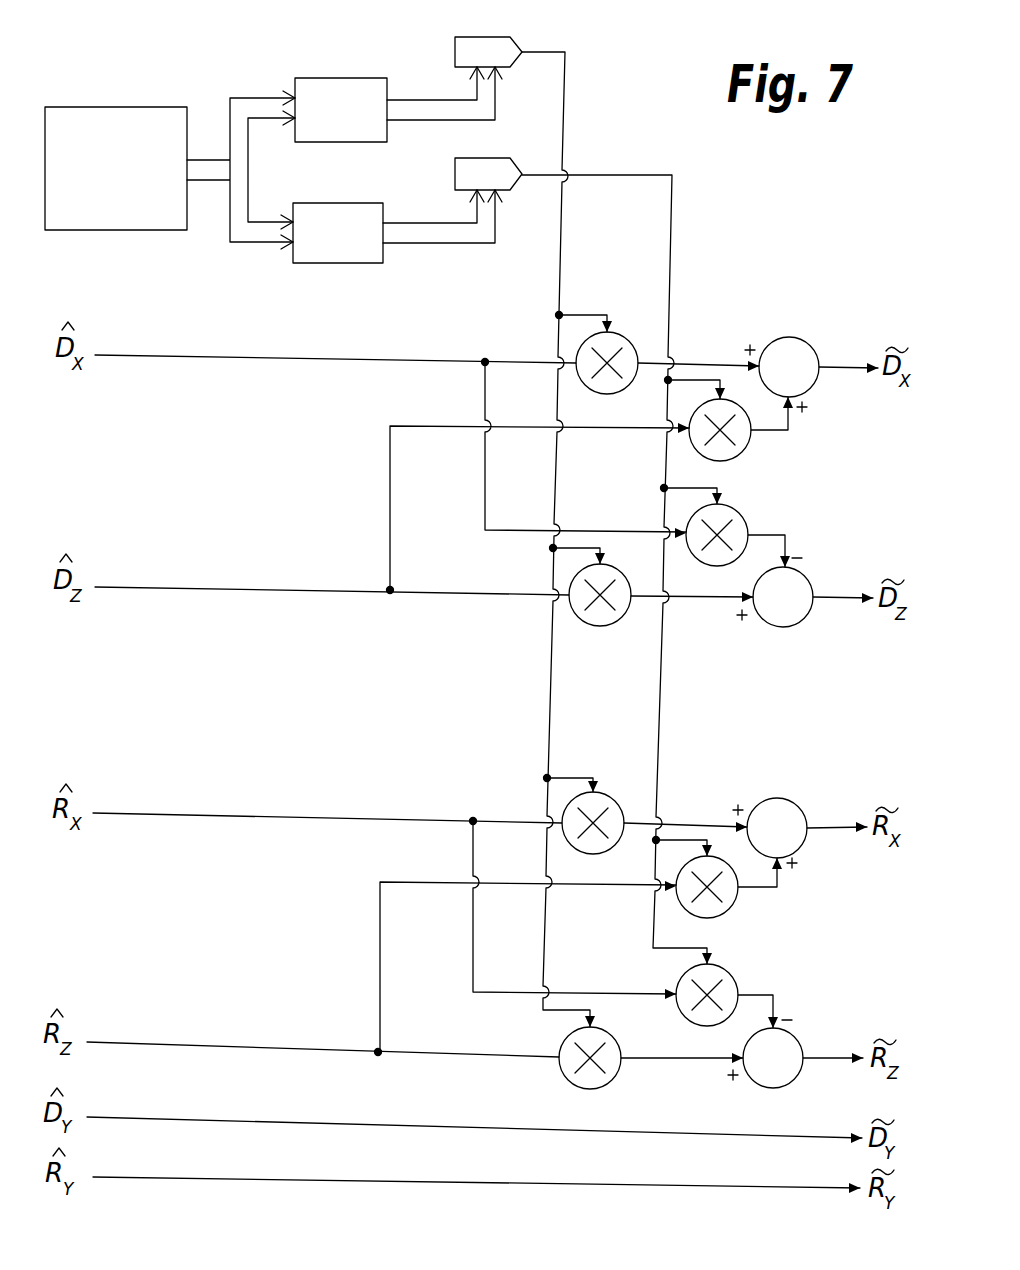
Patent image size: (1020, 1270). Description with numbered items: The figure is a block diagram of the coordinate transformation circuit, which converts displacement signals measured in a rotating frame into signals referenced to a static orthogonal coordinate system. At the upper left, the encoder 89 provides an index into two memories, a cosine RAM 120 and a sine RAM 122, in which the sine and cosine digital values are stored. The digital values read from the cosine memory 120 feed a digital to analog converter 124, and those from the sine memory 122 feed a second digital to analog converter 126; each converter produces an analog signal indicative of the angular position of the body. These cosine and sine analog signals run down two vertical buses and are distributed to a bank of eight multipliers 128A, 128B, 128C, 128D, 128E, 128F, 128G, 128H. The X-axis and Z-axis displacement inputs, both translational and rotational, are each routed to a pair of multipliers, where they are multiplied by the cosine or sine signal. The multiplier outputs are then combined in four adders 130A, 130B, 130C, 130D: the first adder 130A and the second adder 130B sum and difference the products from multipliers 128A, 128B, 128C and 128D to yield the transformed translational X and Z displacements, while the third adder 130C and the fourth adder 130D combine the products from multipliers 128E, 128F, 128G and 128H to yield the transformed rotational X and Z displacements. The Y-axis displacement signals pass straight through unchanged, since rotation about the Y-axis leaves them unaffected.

The encoder 89 is at (95, 107).
The memory 120 is at (307, 78).
The memory 122 is at (348, 263).
The digital to analog converter 124 is at (462, 37).
The digital to analog converter 126 is at (475, 158).
The multiplier 128A is at (627, 333).
The multiplier 128B is at (746, 438).
The multiplier 128C is at (735, 506).
The multiplier 128D is at (575, 622).
The multiplier 128E is at (622, 762).
The multiplier 128F is at (737, 903).
The multiplier 128G is at (720, 965).
The multiplier 128H is at (590, 1087).
The adder 130A is at (782, 338).
The adder 130B is at (807, 573).
The adder 130C is at (775, 800).
The adder 130D is at (797, 1040).